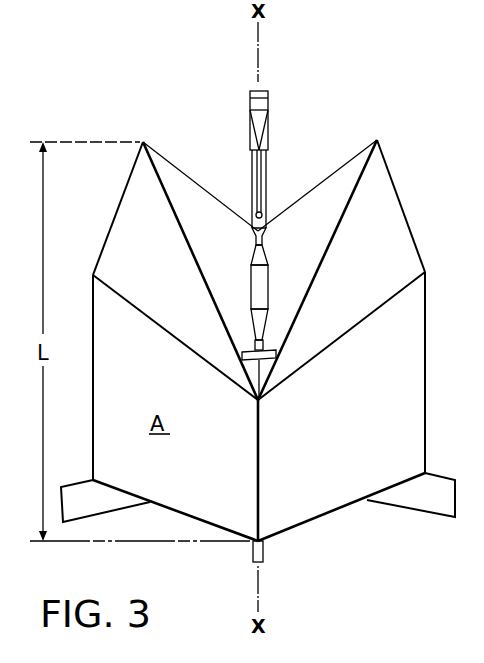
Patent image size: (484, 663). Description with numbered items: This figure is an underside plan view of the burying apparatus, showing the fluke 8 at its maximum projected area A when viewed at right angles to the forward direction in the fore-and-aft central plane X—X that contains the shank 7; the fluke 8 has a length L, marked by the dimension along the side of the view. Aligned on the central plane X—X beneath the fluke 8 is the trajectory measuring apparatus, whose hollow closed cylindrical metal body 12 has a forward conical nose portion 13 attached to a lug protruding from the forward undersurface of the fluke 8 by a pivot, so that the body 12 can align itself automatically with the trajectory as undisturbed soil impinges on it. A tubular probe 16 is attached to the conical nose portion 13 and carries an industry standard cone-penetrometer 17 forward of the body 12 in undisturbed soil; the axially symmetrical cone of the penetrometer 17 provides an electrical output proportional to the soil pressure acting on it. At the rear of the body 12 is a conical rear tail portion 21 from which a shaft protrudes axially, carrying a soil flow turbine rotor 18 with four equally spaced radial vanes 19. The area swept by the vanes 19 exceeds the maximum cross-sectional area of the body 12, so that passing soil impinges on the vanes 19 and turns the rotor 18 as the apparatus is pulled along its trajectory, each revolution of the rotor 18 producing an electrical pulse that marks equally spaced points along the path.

The shank 7 is at (267, 168).
The fluke 8 is at (336, 488).
The hollow closed cylindrical metal body 12 is at (260, 288).
The forward conical nose portion 13 is at (260, 259).
The tubular probe 16 is at (266, 229).
The cone-penetrometer 17 is at (257, 212).
The soil flow turbine rotor 18 is at (262, 362).
The radial vanes 19 is at (282, 350).
The conical rear tail portion 21 is at (255, 322).